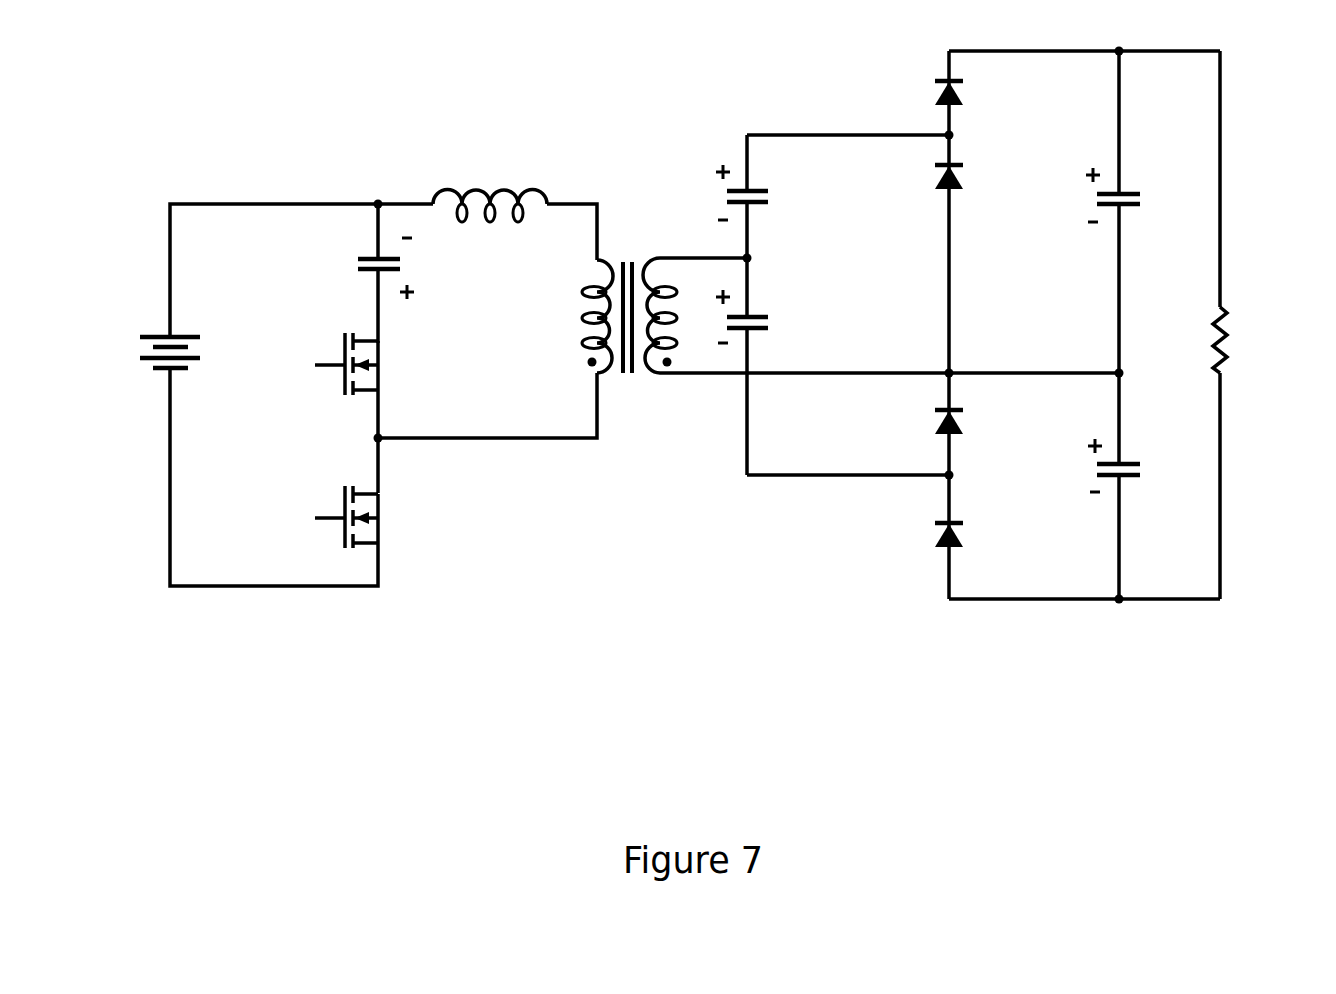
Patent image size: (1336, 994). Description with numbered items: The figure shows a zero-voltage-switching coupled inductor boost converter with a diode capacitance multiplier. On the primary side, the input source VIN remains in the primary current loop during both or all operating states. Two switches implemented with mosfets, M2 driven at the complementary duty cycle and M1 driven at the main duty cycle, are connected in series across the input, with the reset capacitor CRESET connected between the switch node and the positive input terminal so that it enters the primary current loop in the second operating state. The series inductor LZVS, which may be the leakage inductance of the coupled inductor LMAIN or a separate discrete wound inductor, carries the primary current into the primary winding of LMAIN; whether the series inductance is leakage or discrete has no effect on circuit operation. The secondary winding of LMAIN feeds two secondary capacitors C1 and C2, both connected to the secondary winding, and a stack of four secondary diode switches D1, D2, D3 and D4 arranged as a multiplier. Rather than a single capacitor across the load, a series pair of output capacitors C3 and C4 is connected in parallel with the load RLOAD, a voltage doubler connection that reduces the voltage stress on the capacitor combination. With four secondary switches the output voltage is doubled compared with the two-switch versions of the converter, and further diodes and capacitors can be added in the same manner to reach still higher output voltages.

The input source VIN is at (137, 360).
The reset capacitor CRESET is at (331, 268).
The mosfet switch M2 is at (330, 364).
The mosfet switch M1 is at (354, 517).
The series inductor LZVS is at (490, 182).
The coupled inductor LMAIN is at (630, 293).
The secondary capacitor C1 is at (763, 194).
The secondary capacitor C2 is at (763, 320).
The secondary diode switch D1 is at (973, 100).
The secondary diode switch D2 is at (973, 184).
The secondary diode switch D3 is at (973, 429).
The secondary diode switch D4 is at (973, 541).
The output capacitor C3 is at (1134, 197).
The output capacitor C4 is at (1135, 468).
The load resistor RLOAD is at (1265, 340).